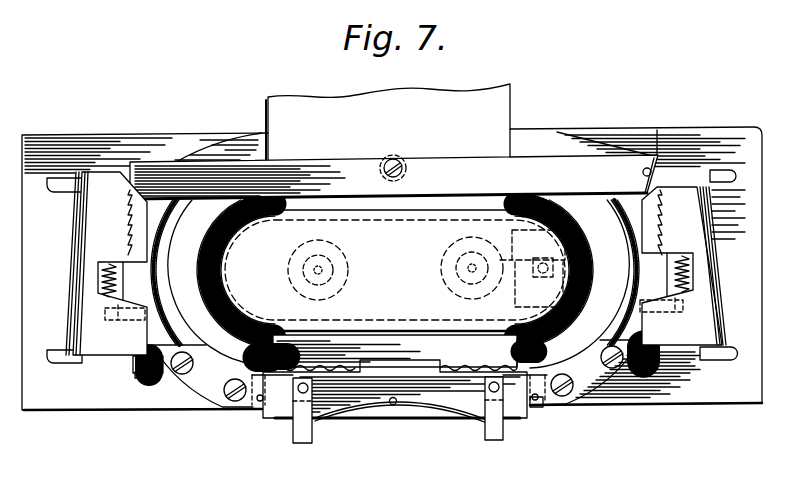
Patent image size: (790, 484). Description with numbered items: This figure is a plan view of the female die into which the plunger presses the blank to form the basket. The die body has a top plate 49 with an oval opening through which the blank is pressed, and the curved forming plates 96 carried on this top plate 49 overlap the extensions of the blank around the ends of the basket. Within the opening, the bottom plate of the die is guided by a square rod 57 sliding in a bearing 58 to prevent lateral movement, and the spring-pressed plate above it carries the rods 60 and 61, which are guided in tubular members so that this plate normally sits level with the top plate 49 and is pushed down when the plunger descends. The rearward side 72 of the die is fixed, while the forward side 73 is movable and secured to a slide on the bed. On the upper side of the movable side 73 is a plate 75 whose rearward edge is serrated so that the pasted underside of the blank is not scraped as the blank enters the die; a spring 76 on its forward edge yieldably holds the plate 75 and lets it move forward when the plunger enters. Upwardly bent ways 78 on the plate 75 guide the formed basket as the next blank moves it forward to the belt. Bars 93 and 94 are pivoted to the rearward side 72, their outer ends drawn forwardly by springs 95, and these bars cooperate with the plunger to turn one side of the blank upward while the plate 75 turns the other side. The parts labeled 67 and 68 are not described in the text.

The top plate 49 is at (152, 213).
The square rod 57 is at (532, 253).
The bearing 58 is at (521, 289).
The rod 60 is at (321, 268).
The rod 61 is at (468, 266).
The left arc plate 67 is at (207, 303).
The right arc plate 68 is at (585, 302).
The rearward side of the die 72 is at (283, 113).
The forward side of the die 73 is at (383, 345).
The plate 75 is at (419, 361).
The spring 76 is at (440, 410).
The upwardly bent ways 78 is at (300, 428).
The bar 93 is at (327, 158).
The bar 94 is at (431, 155).
The spring 95 is at (100, 273).
The curved forming plate 96 is at (100, 203).